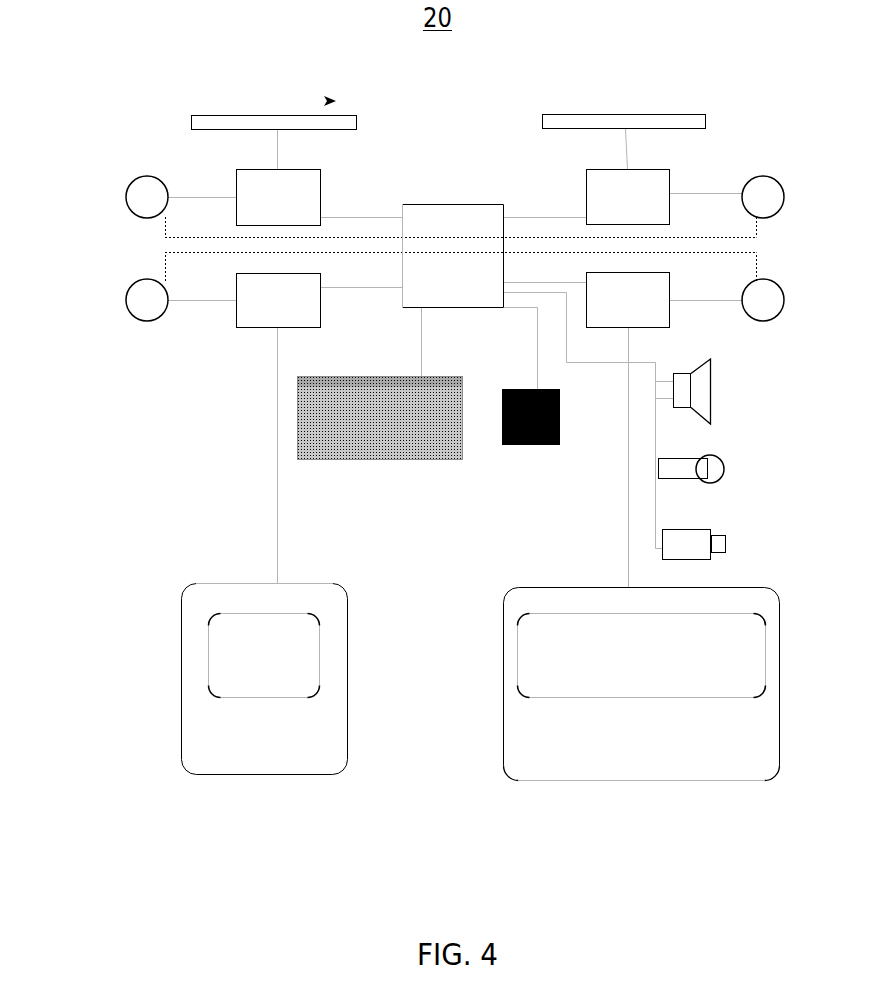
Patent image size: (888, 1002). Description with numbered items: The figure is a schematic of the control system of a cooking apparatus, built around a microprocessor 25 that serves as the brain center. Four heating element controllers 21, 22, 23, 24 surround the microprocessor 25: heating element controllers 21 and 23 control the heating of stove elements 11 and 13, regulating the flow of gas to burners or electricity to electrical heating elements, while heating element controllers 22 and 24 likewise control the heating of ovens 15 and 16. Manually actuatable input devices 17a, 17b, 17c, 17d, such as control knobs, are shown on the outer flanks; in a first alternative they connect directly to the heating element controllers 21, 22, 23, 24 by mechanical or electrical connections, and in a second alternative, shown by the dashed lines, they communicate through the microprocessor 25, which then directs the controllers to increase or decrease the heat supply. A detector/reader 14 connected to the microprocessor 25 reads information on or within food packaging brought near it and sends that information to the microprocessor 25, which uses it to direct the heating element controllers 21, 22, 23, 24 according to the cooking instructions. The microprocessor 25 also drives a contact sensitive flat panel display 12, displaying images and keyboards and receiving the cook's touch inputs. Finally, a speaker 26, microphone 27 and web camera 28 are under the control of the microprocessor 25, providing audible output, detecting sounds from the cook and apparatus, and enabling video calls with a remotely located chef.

The stove element 11 is at (212, 113).
The stove element 13 is at (570, 113).
The heating element controller 21 is at (320, 169).
The heating element controller 22 is at (320, 273).
The heating element controller 23 is at (660, 169).
The heating element controller 24 is at (660, 272).
The microprocessor 25 is at (480, 204).
The manually actuatable input device 17a is at (146, 178).
The manually actuatable input device 17b is at (776, 284).
The manually actuatable input device 17c is at (146, 282).
The manually actuatable input device 17d is at (784, 193).
The contact sensitive flat panel display 12 is at (297, 375).
The detector/reader 14 is at (546, 445).
The speaker 26 is at (710, 364).
The microphone 27 is at (716, 455).
The web camera 28 is at (727, 541).
The oven 15 is at (181, 678).
The oven 16 is at (503, 678).